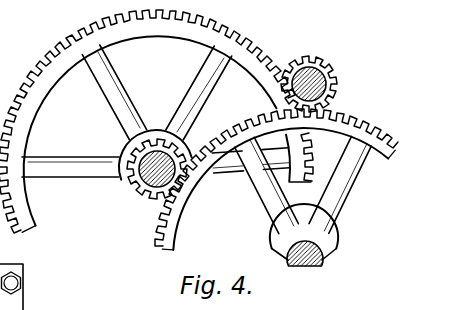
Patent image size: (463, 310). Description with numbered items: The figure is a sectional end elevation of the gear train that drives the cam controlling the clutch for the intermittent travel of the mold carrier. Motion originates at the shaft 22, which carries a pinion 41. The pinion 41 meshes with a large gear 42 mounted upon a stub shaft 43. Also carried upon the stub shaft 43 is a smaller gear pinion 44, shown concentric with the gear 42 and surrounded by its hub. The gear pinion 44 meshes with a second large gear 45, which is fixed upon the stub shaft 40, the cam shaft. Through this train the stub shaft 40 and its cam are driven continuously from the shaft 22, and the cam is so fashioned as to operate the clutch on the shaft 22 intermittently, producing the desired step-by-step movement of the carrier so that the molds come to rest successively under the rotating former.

The gear 42 is at (190, 29).
The pinion 41 is at (320, 61).
The shaft 22 is at (327, 96).
The gear pinion 44 is at (128, 180).
The stub shaft 43 is at (144, 197).
The gear 45 is at (168, 213).
The stub shaft 40 is at (308, 266).